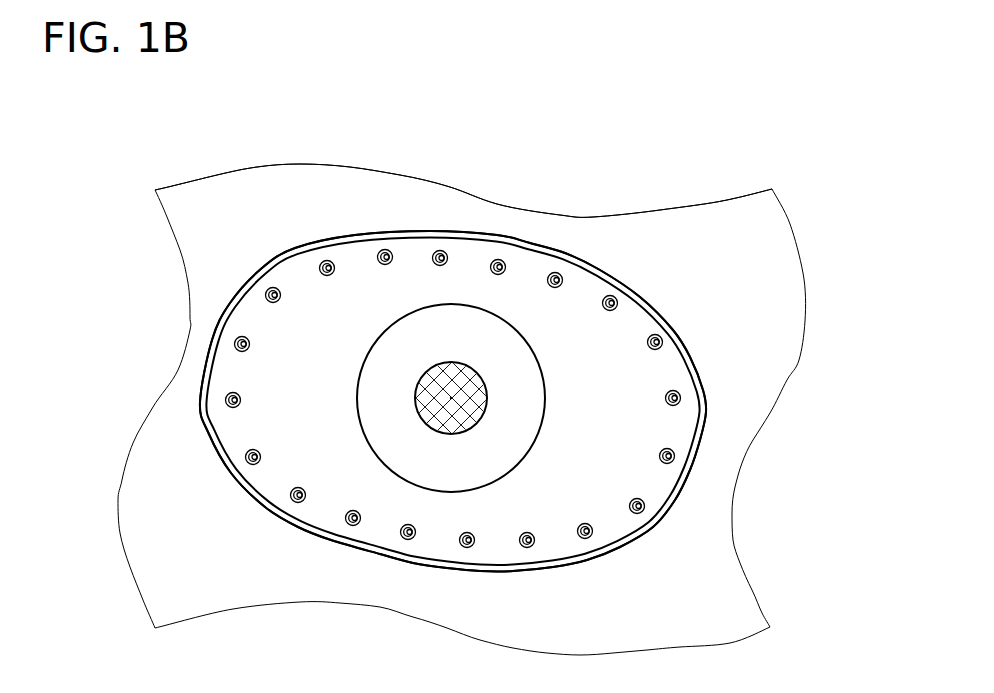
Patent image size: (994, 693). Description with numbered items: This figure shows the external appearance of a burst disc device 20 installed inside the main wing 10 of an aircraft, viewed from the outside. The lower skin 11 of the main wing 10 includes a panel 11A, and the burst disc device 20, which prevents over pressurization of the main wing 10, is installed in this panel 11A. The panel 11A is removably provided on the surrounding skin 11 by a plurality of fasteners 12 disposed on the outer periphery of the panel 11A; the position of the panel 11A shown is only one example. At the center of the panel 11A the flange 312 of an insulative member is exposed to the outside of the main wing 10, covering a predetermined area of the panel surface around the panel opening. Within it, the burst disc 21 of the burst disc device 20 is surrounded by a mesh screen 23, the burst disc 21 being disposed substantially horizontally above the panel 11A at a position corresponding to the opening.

The main wing 10 is at (712, 181).
The lower skin 11 is at (218, 176).
The panel 11A is at (577, 256).
The fasteners 12 is at (273, 287).
The burst disc device 20 is at (362, 478).
The burst disc 21 is at (430, 406).
The mesh screen 23 is at (416, 387).
The flange 312 is at (505, 350).